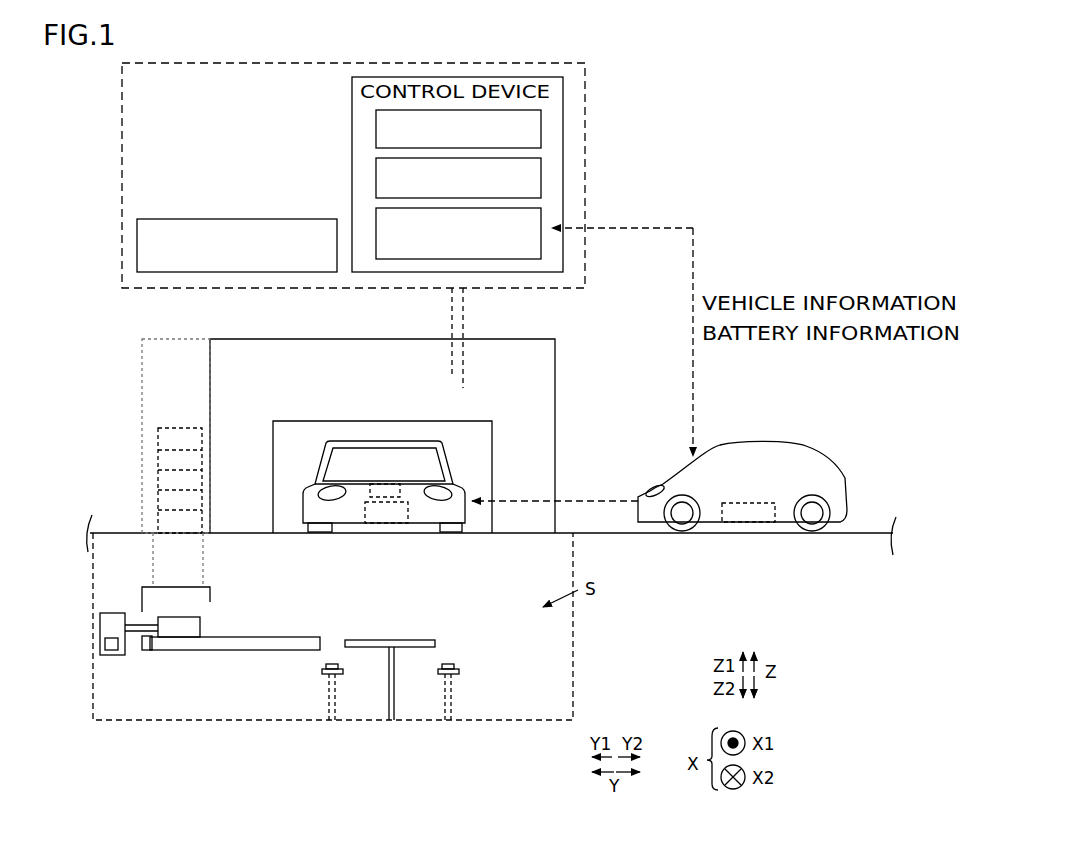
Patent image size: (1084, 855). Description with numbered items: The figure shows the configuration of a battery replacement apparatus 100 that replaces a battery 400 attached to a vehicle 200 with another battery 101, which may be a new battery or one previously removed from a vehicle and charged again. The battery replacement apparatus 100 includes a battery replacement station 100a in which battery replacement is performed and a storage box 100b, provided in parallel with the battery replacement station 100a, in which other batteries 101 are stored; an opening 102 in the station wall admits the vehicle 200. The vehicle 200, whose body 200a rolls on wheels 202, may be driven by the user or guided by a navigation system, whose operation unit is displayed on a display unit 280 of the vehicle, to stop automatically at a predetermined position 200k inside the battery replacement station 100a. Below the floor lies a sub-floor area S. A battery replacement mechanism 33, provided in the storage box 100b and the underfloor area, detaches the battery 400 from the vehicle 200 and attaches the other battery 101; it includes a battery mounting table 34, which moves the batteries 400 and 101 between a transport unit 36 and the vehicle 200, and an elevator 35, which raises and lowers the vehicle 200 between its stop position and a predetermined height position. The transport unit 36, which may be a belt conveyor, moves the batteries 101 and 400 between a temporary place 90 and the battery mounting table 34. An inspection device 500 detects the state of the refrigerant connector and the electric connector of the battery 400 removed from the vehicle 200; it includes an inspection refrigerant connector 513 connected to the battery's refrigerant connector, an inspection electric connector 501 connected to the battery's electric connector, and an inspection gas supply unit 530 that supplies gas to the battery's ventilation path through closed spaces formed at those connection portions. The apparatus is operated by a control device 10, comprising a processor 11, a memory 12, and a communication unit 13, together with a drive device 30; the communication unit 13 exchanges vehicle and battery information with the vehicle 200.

The control device 10 is at (549, 74).
The processor 11 is at (541, 128).
The memory 12 is at (541, 180).
The communication unit 13 is at (541, 215).
The drive device 30 is at (260, 273).
The battery replacement mechanism 33 is at (395, 616).
The battery mounting table 34 is at (425, 640).
The elevator 35 is at (326, 679).
The transport unit 36 is at (253, 637).
The temporary place 90 is at (138, 586).
The battery replacement apparatus 100 is at (206, 335).
The battery replacement station 100a is at (535, 378).
The storage box 100b is at (176, 392).
The other battery 101 is at (158, 461).
The garage opening 102 is at (276, 444).
The vehicle 200 is at (467, 533).
The vehicle body 200a is at (762, 462).
The vehicle position 200k is at (345, 534).
The wheel 202 is at (682, 532).
The display unit 280 is at (405, 496).
The battery 400 is at (388, 523).
The inspection device 500 is at (105, 663).
The inspection electric connector 501 is at (146, 641).
The inspection refrigerant connector 513 is at (127, 630).
The inspection gas supply unit 530 is at (112, 656).